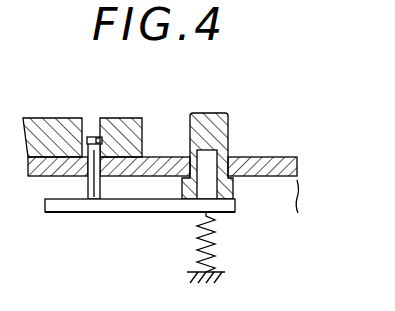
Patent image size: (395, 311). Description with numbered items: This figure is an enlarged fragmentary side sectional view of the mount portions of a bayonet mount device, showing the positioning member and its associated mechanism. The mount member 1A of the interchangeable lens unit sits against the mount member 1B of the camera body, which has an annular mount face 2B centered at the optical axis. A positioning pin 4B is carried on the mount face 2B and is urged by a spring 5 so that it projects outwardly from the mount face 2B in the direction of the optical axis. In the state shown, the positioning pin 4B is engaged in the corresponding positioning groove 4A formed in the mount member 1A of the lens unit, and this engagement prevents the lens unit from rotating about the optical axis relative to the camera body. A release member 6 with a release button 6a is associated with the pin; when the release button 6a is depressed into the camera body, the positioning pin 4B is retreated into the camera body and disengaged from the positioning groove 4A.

The mount member of the lens unit 1A is at (142, 134).
The mount member of the camera body 1B is at (300, 158).
The mount face 2B is at (272, 157).
The positioning groove 4A is at (97, 137).
The positioning pin 4B is at (86, 131).
The spring 5 is at (218, 231).
The release member 6 is at (153, 213).
The release button 6a is at (228, 126).